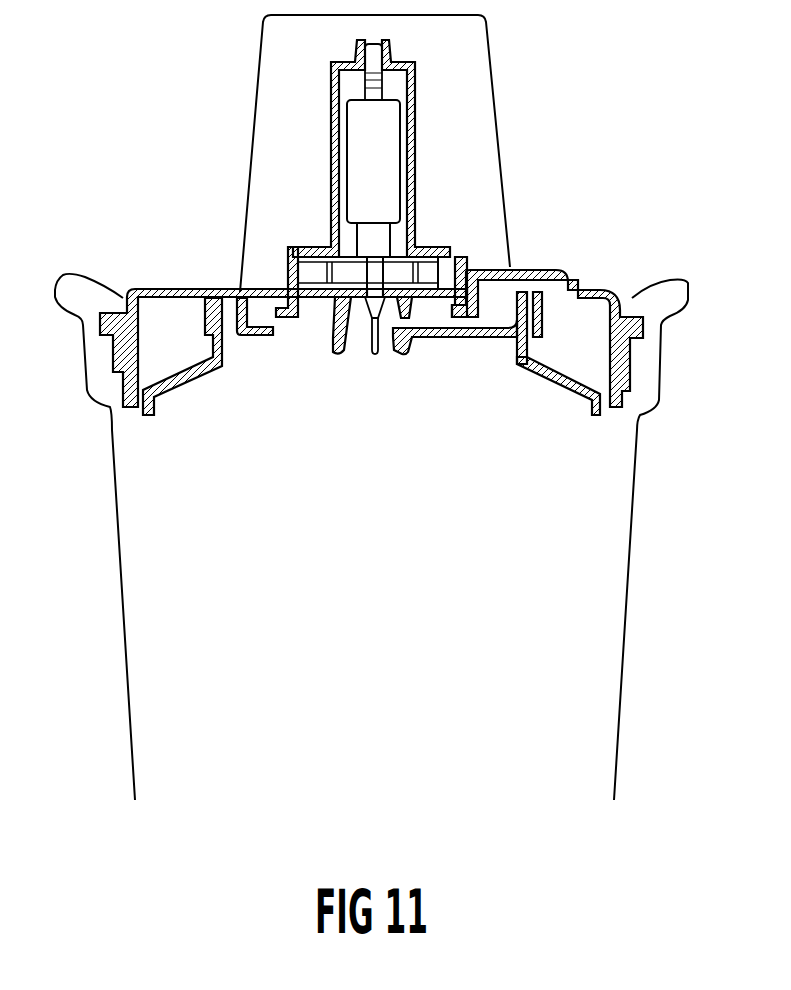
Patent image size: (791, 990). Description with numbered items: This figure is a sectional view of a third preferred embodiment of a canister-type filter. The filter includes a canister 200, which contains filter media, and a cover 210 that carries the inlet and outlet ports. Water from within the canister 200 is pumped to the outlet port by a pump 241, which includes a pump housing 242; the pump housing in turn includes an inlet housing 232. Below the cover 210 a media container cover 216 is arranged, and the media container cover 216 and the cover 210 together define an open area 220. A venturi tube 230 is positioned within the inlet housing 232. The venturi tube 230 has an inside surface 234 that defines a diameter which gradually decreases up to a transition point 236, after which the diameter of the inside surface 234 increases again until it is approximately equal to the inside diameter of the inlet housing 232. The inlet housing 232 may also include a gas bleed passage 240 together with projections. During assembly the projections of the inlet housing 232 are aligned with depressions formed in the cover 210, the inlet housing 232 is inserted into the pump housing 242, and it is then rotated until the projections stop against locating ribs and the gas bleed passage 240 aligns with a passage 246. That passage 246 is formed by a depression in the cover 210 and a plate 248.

The canister 200 is at (628, 603).
The cover 210 is at (566, 268).
The media container cover 216 is at (567, 377).
The open area 220 is at (583, 318).
The venturi tube 230 is at (335, 338).
The inlet housing 232 is at (313, 298).
The inside surface 234 is at (402, 352).
The transition point 236 is at (357, 323).
The gas bleed passage 240 is at (443, 337).
The pump 241 is at (422, 117).
The pump housing 242 is at (297, 257).
The passage 246 is at (527, 300).
The plate 248 is at (492, 337).